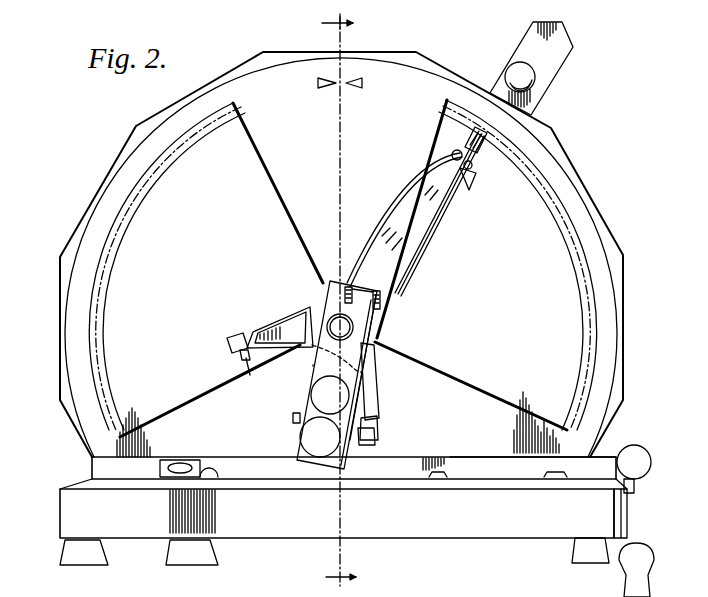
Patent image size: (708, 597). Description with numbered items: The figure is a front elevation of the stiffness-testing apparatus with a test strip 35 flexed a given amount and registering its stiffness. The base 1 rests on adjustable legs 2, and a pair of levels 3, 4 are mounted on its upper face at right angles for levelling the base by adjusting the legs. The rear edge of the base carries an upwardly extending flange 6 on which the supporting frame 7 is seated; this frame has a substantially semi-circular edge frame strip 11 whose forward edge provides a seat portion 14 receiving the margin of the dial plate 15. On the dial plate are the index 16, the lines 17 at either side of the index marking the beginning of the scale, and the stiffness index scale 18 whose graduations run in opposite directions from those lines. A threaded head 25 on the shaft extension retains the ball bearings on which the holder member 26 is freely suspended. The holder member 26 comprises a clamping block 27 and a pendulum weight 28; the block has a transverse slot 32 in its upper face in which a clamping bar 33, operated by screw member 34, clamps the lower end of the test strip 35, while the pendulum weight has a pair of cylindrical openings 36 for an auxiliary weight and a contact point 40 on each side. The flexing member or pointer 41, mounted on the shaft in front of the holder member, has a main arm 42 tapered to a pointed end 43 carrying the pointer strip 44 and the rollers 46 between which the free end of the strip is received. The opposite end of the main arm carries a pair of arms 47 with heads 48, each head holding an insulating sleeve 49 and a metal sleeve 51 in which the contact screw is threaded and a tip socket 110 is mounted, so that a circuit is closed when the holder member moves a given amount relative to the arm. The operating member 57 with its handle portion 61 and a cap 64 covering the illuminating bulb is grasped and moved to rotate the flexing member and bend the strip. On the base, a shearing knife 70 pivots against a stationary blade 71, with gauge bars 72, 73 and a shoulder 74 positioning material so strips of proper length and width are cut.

The base 1 is at (88, 482).
The legs 2 is at (60, 557).
The level 3 is at (178, 462).
The level 4 is at (215, 462).
The flange 6 is at (90, 463).
The supporting frame 7 is at (594, 213).
The edge frame strip 11 is at (567, 160).
The seat portion 14 is at (624, 256).
The dial plate 15 is at (534, 147).
The index 16 is at (340, 88).
The lines 17 is at (266, 155).
The stiffness index scale 18 is at (587, 240).
The threaded head 25 is at (352, 332).
The holder member 26 is at (377, 322).
The clamping block 27 is at (330, 295).
The pendulum weight 28 is at (313, 367).
The transverse slot 32 is at (355, 291).
The clamping bar 33 is at (345, 287).
The screw member 34 is at (381, 300).
The test strip 35 is at (380, 226).
The cylindrical openings 36 is at (311, 395).
The contact point 40 is at (293, 420).
The flexing member 41 is at (450, 221).
The main arm 42 is at (428, 250).
The pointed end 43 is at (471, 166).
The pointer strip 44 is at (471, 135).
The rollers 46 is at (469, 188).
The arms 47 is at (276, 325).
The heads 48 is at (235, 338).
The insulating sleeve 49 is at (240, 358).
The metal sleeve 51 is at (246, 359).
The operating member 57 is at (536, 102).
The handle portion 61 is at (573, 48).
The cap 64 is at (536, 82).
The shearing knife 70 is at (641, 478).
The stationary blade 71 is at (636, 488).
The gauge bar 72 is at (443, 478).
The gauge bar 73 is at (558, 478).
The shoulder 74 is at (497, 462).
The tip socket 110 is at (376, 435).